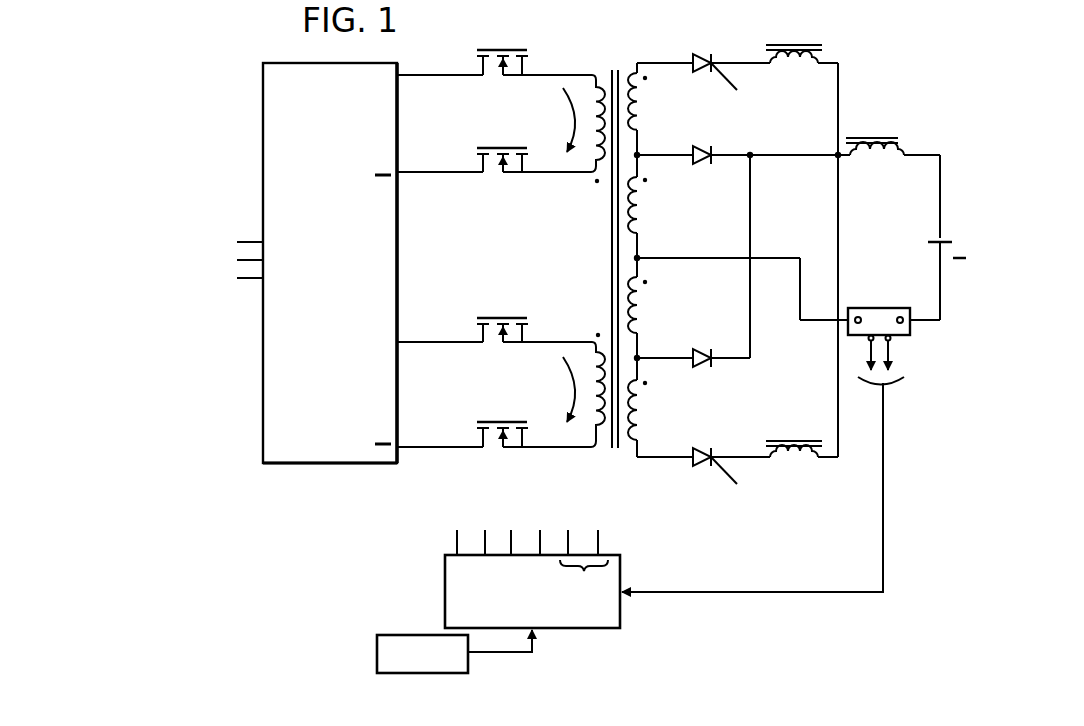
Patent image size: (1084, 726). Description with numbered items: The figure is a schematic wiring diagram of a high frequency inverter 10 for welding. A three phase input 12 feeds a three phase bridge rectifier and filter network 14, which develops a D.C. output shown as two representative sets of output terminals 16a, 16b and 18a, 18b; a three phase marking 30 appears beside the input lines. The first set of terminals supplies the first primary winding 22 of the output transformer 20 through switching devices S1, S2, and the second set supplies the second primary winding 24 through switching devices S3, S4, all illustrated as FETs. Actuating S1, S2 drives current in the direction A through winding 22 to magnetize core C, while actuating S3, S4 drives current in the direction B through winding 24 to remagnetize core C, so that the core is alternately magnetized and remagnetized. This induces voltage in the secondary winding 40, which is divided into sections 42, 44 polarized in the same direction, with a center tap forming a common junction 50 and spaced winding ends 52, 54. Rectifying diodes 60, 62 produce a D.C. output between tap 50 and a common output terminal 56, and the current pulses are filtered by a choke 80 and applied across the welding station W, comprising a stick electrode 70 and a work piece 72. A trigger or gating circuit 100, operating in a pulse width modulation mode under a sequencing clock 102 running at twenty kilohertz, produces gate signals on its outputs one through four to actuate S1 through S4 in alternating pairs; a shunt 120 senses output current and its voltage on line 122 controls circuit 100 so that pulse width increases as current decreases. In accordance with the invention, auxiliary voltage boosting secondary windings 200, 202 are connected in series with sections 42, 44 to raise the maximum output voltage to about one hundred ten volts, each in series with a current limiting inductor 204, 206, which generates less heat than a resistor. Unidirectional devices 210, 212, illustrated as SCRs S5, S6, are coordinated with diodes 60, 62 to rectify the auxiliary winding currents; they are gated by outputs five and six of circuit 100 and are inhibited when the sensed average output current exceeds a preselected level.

The high frequency inverter 10 is at (352, 518).
The three phase input 12 is at (244, 238).
The three phase bridge rectifier and filter network 14 is at (268, 116).
The output terminal 16a is at (400, 77).
The output terminal 16b is at (400, 171).
The output terminal 18a is at (400, 344).
The output terminal 18b is at (400, 446).
The output transformer 20 is at (617, 58).
The first primary winding 22 is at (592, 92).
The second primary winding 24 is at (590, 355).
The three phase input 30 is at (211, 266).
The secondary winding 40 is at (668, 290).
The secondary winding section 42 is at (640, 212).
The secondary winding section 44 is at (640, 306).
The common junction 50 is at (640, 258).
The winding end 52 is at (640, 156).
The winding end 54 is at (640, 358).
The common output terminal 56 is at (836, 152).
The rectifying diode 60 is at (705, 163).
The rectifying diode 62 is at (706, 364).
The stick electrode 70 is at (938, 234).
The work piece 72 is at (936, 246).
The choke 80 is at (868, 135).
The trigger or gating circuit 100 is at (445, 596).
The sequencing clock 102 is at (377, 653).
The shunt 120 is at (876, 310).
The line 122 is at (660, 592).
The auxiliary voltage boosting secondary winding 200 is at (640, 112).
The auxiliary voltage boosting secondary winding 202 is at (640, 424).
The current limiting inductor 204 is at (800, 40).
The current limiting inductor 206 is at (805, 464).
The unidirectional device 210 is at (708, 57).
The unidirectional device 212 is at (704, 466).
The switching device S1 is at (533, 50).
The switching device S2 is at (533, 147).
The switching device S3 is at (533, 317).
The switching device S4 is at (533, 422).
The SCR S5 is at (726, 83).
The SCR S6 is at (727, 478).
The current direction A is at (559, 120).
The current direction B is at (560, 389).
The core C is at (616, 452).
The welding station W is at (934, 240).